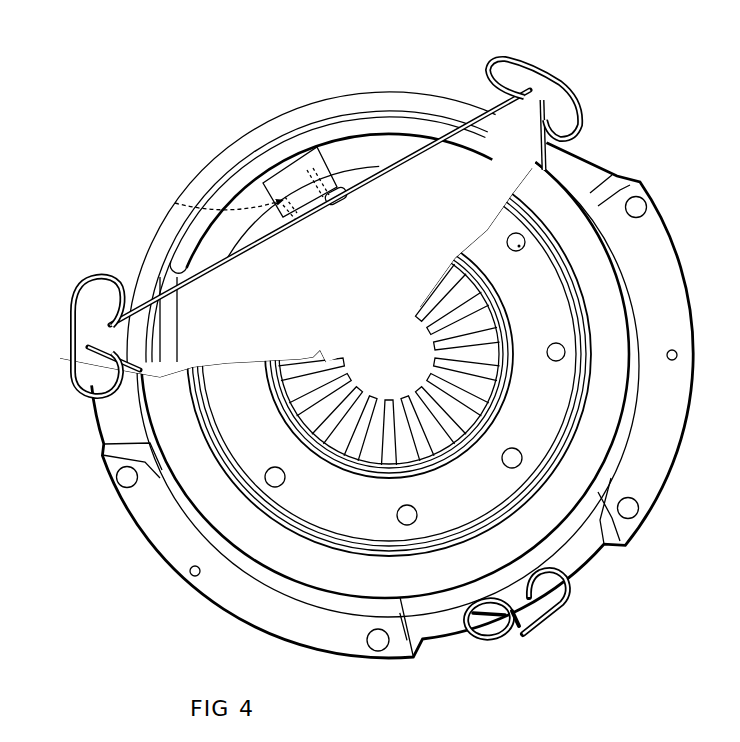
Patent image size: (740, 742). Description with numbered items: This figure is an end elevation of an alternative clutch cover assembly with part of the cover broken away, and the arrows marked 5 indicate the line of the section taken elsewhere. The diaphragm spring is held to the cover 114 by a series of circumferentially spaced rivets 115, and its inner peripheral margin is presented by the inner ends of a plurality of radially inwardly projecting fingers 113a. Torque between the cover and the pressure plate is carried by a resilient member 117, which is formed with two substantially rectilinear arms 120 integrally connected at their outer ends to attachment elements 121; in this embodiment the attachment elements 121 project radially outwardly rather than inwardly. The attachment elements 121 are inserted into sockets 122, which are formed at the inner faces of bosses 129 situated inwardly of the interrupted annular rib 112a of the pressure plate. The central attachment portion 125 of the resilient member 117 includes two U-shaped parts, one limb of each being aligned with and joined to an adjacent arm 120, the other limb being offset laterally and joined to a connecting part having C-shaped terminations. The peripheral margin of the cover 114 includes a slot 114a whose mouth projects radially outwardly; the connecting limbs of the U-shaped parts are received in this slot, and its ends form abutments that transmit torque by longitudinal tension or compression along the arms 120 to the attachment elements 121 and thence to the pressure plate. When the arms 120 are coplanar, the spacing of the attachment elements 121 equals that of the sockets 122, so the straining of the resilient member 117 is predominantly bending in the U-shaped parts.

The section line 5- 5 is at (253, 103).
The interrupted annular rib 112a is at (608, 130).
The radially inwardly projecting fingers 113a is at (383, 394).
The cover 114 is at (560, 512).
The slot 114a is at (519, 636).
The rivets 115 is at (523, 249).
The resilient member 117 is at (463, 110).
The arms 120 is at (414, 140).
The attachment elements 121 is at (301, 218).
The sockets 122 is at (216, 205).
The central attachment portion 125 is at (66, 357).
The bosses 129 is at (298, 182).